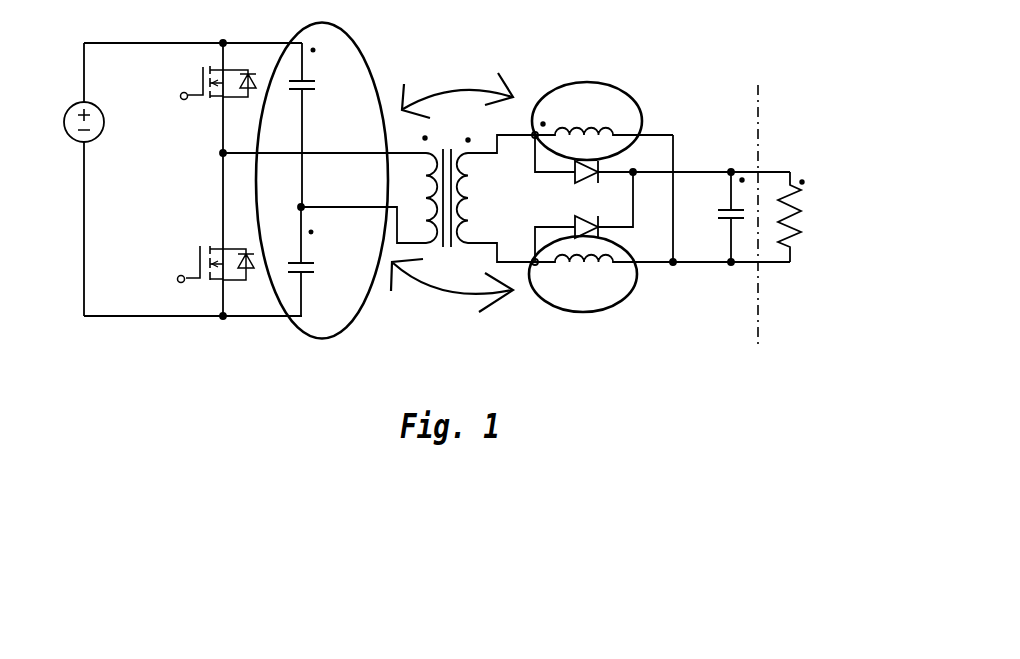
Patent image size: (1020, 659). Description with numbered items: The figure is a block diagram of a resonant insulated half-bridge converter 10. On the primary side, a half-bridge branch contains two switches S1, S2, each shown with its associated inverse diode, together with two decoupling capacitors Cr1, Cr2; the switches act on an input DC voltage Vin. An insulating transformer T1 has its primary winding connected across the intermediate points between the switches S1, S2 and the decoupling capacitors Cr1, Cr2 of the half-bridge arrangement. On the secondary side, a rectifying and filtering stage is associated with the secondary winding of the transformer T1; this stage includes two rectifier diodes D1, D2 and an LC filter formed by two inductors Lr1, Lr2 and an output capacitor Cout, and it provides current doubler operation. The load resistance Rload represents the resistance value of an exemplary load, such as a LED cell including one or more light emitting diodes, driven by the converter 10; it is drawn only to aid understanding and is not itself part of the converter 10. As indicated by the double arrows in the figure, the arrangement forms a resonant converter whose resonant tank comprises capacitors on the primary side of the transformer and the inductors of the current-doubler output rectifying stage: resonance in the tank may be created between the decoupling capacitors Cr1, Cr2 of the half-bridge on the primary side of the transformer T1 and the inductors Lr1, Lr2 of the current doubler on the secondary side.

The resonant insulated half-bridge converter 10 is at (678, 54).
The input DC voltage Vin is at (69, 108).
The switch S1 is at (208, 77).
The switch S2 is at (209, 257).
The decoupling capacitor Cr1 is at (328, 125).
The decoupling capacitor Cr2 is at (357, 260).
The insulating transformer T1 is at (479, 192).
The inductor Lr1 is at (602, 121).
The inductor Lr2 is at (659, 274).
The rectifier diode D1 is at (662, 159).
The rectifier diode D2 is at (584, 217).
The output capacitor Cout is at (739, 228).
The load resistance Rload is at (833, 217).